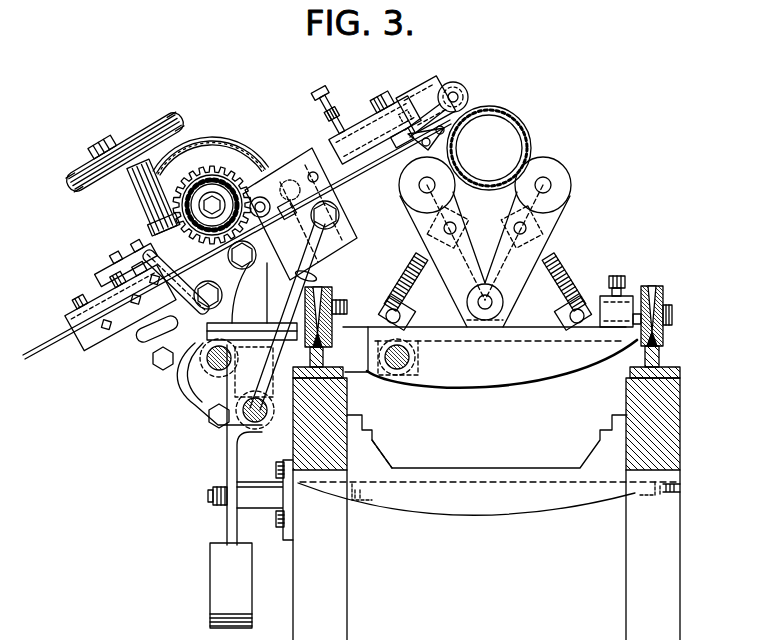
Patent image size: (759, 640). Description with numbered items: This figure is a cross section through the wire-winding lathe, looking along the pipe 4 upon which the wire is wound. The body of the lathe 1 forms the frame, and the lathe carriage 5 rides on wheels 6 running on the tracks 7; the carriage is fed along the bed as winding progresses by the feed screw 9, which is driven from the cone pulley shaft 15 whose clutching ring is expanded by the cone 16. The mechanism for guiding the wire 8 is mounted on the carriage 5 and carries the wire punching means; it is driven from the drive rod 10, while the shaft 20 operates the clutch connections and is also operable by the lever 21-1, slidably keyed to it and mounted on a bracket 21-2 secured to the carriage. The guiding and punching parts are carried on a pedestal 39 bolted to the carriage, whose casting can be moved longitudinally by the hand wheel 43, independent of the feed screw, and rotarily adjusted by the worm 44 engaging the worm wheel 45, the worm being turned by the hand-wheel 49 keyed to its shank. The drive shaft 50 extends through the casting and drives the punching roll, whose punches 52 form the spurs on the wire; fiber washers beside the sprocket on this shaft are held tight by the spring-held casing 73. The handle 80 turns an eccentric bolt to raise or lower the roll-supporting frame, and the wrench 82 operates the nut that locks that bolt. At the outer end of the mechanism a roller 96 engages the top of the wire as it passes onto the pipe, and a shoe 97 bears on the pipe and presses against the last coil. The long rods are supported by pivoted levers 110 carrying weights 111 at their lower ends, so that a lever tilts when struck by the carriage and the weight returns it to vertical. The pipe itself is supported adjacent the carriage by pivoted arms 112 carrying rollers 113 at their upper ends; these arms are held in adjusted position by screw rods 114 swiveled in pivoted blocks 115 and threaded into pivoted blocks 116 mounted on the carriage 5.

The body of the lathe 1 is at (350, 405).
The pipe 4 is at (520, 130).
The lathe carriage 5 is at (535, 378).
The wheels 6 is at (330, 307).
The tracks 7 is at (665, 356).
The mechanism for guiding the wire 8 is at (364, 118).
The feed screw 9 is at (406, 369).
The drive rod 10 is at (213, 370).
The cone pulley shaft 15 is at (140, 631).
The cone 16 is at (212, 627).
The shaft 20 is at (256, 425).
The lever 21-1 is at (320, 263).
The bracket 21-2 is at (237, 412).
The pedestal 39 is at (160, 349).
The hand wheel 43 is at (199, 137).
The worm 44 is at (160, 230).
The worm wheel 45 is at (221, 168).
The hand-wheel 49 is at (74, 176).
The drive shaft 50 is at (205, 210).
The punches 52 is at (236, 182).
The casing 73 is at (176, 376).
The handle 80 is at (117, 340).
The wrench 82 is at (143, 255).
The roller 96 is at (460, 86).
The shoe 97 is at (489, 107).
The pivoted levers 110 is at (227, 467).
The weights 111 is at (220, 558).
The pivoted arms 112 is at (522, 213).
The rollers 113 is at (566, 176).
The screw rods 114 is at (562, 285).
The pivoted blocks 115 is at (548, 214).
The pivoted blocks 116 is at (408, 308).